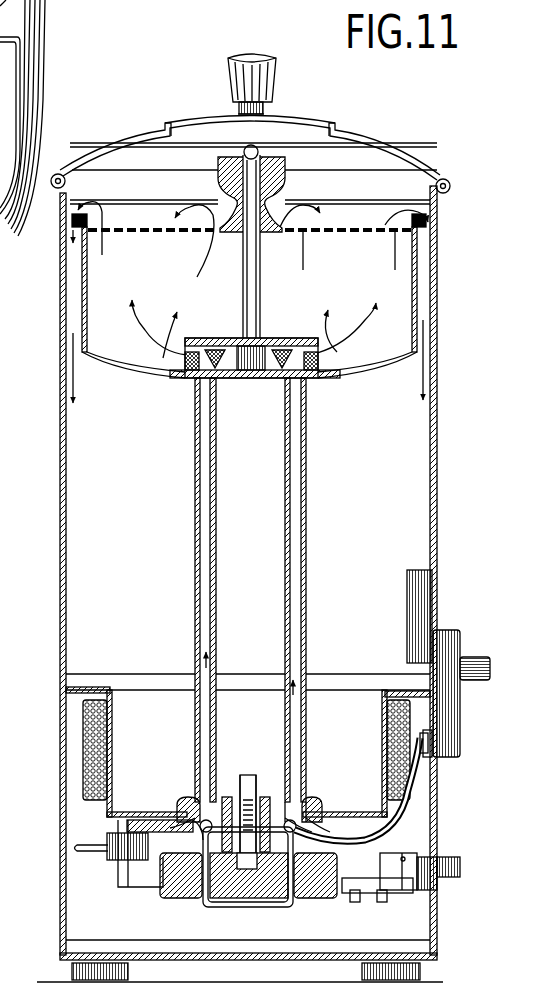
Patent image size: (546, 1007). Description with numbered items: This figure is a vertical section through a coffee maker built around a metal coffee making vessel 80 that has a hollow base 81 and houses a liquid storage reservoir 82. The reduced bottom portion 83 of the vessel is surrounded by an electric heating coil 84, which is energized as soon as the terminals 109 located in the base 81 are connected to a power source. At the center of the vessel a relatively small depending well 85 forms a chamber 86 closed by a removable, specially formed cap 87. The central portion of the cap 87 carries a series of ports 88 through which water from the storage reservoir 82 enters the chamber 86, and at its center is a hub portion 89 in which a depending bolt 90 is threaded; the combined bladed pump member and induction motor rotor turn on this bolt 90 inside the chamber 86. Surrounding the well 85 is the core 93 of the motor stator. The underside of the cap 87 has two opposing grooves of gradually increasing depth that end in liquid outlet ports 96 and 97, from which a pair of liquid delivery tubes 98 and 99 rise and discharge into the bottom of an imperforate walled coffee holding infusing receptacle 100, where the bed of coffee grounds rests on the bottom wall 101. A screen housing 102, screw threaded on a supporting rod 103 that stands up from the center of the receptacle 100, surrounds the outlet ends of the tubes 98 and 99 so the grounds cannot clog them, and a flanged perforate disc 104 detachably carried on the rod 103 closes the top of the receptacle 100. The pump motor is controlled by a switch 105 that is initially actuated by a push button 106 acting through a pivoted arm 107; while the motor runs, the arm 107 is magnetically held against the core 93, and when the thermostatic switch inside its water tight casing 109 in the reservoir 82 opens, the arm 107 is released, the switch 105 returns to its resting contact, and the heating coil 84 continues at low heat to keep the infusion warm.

The coffee making vessel 80 is at (60, 468).
The hollow base 81 is at (437, 792).
The liquid storage reservoir 82 is at (78, 653).
The reduced bottom portion 83 is at (107, 732).
The electric heating coil 84 is at (82, 743).
The depending well 85 is at (300, 845).
The chamber 86 is at (203, 838).
The cap 87 is at (310, 798).
The ports 88 is at (270, 797).
The hub portion 89 is at (227, 837).
The depending bolt 90 is at (247, 797).
The core of the motor stator 93 is at (167, 892).
The liquid outlet port 96 is at (187, 800).
The liquid outlet port 97 is at (296, 800).
The liquid delivery tube 98 is at (195, 523).
The liquid delivery tube 99 is at (302, 550).
The coffee holding infusing receptacle 100 is at (412, 281).
The bottom wall 101 is at (352, 382).
The screen housing 102 is at (280, 342).
The supporting rod 103 is at (250, 275).
The perforate disc 104 is at (328, 234).
The switch 105 is at (390, 893).
The push button 106 is at (442, 857).
The pivoted arm 107 is at (407, 850).
The water tight casing 109 is at (87, 848).